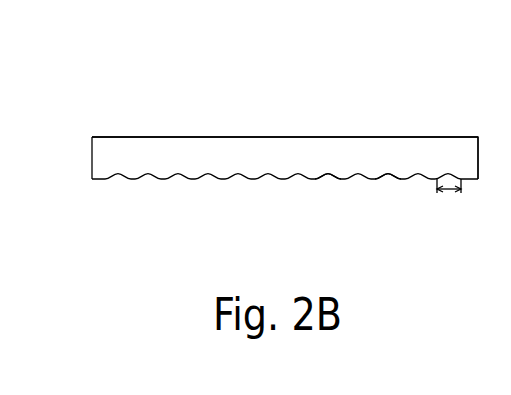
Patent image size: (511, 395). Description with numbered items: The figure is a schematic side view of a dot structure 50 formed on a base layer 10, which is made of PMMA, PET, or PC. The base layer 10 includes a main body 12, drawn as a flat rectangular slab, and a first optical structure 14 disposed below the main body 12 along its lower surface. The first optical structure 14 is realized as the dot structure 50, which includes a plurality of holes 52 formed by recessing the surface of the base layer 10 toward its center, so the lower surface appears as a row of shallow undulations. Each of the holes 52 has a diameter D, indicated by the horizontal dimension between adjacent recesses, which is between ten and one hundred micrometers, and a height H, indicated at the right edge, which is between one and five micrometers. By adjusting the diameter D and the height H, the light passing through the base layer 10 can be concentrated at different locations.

The base layer 10 is at (255, 77).
The main body 12 is at (338, 141).
The first optical structure 14 is at (281, 187).
The dot structure 50 is at (330, 185).
The holes 52 is at (387, 179).
The diameter D is at (449, 191).
The height H is at (478, 179).